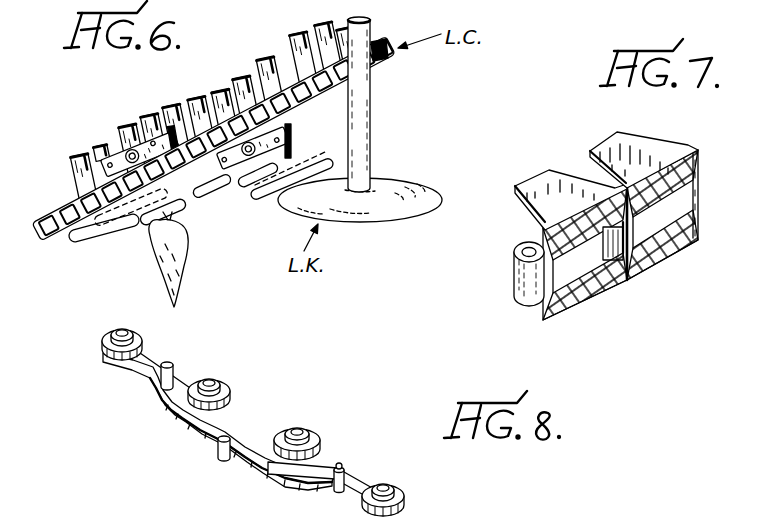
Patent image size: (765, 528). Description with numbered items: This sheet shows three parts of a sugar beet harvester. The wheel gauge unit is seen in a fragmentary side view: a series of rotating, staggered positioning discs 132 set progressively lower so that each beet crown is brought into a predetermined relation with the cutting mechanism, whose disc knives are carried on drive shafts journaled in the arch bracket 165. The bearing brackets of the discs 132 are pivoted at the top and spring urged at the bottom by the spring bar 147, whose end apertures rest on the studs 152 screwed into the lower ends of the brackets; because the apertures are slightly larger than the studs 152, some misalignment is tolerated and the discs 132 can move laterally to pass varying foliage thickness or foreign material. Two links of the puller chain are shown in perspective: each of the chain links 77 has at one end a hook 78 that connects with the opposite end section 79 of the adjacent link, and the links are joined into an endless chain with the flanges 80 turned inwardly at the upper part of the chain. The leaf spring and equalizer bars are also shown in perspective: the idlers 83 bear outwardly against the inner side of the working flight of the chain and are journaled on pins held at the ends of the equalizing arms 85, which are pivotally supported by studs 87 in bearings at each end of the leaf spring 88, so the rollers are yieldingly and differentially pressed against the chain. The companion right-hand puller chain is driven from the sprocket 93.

In FIG. 6, the positioning disc 132 is at (86, 236).
In FIG. 6, the spring bar 147 is at (135, 131).
In FIG. 6, the studs 152 is at (96, 150).
In FIG. 6, the arch bracket 165 is at (371, 122).
In FIG. 7, the chain links 77 is at (593, 302).
In FIG. 7, the hook 78 is at (514, 258).
In FIG. 7, the opposite end section 79 is at (703, 203).
In FIG. 7, the flanges 80 is at (632, 140).
In FIG. 8, the idlers 83 is at (406, 511).
In FIG. 8, the equalizing arms 85 is at (148, 360).
In FIG. 8, the studs 87 is at (340, 466).
In FIG. 8, the leaf spring 88 is at (178, 430).
In FIG. 8, the sprocket 93 is at (232, 389).